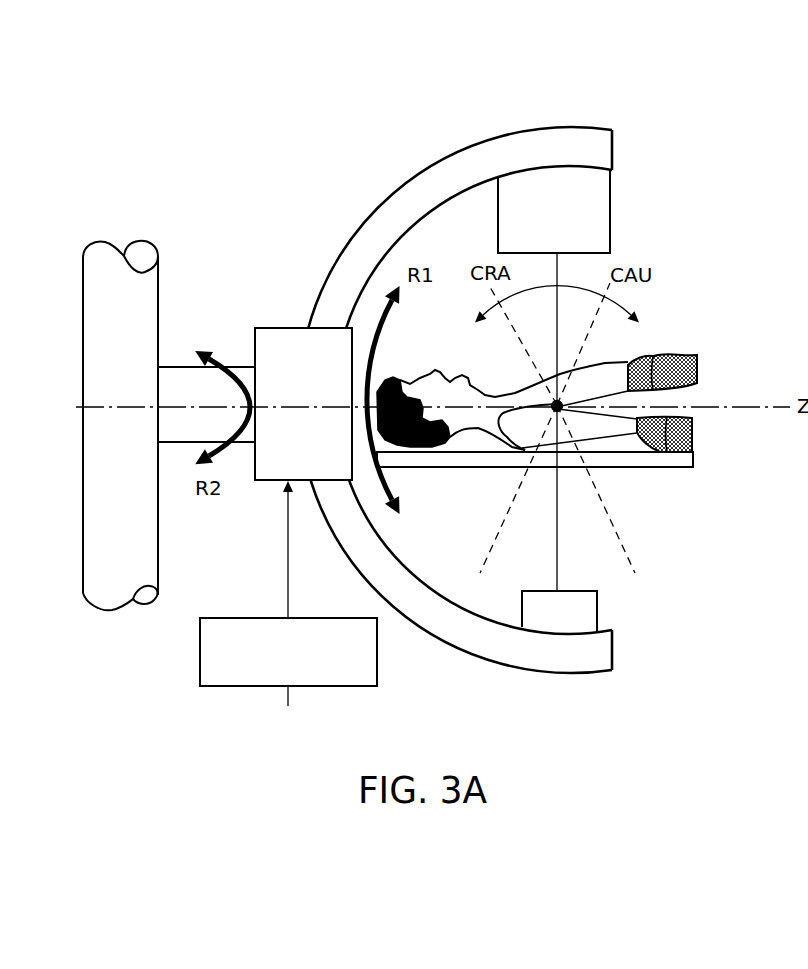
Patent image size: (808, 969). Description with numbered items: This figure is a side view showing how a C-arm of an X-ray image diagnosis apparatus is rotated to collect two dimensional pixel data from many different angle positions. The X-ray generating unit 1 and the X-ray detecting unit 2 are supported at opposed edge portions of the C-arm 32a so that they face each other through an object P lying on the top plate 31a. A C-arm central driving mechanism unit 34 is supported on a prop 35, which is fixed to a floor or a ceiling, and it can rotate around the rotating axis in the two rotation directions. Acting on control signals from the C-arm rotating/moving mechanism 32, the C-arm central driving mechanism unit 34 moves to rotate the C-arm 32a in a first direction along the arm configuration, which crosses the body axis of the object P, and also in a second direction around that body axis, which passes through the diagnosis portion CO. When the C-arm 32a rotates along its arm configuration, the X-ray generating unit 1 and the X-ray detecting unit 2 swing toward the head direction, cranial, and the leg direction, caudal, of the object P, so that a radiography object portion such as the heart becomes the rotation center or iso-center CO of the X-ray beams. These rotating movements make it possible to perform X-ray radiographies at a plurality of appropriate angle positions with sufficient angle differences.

The X-ray generating unit 1 is at (598, 613).
The X-ray detecting unit 2 is at (610, 198).
The top plate 31a is at (643, 467).
The C-arm rotating/moving mechanism 32 is at (378, 662).
The C-arm 32a is at (386, 196).
The C-arm central driving mechanism unit 34 is at (286, 328).
The prop 35 is at (158, 278).
The object P is at (692, 435).
The diagnosis portion (iso-center) CO is at (560, 405).